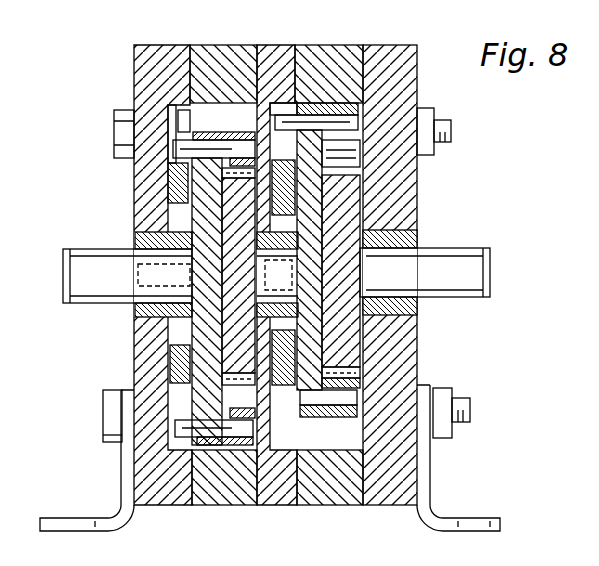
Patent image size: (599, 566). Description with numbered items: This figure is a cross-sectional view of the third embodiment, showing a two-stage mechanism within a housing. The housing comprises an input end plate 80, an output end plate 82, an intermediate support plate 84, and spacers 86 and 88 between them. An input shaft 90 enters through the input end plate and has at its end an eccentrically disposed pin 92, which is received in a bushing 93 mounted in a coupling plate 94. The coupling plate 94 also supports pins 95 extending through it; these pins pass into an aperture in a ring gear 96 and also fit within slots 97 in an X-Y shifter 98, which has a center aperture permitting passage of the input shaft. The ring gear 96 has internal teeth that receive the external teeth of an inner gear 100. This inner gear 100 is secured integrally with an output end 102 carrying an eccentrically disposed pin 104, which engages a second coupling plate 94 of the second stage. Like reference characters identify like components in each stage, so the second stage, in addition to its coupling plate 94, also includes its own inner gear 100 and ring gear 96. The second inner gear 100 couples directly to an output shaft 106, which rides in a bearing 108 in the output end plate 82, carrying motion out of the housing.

The input end plate 80 is at (155, 100).
The output end plate 82 is at (412, 213).
The intermediate support plate 84 is at (278, 45).
The spacer 86 is at (230, 45).
The spacer 88 is at (333, 45).
The input shaft 90 is at (63, 272).
The eccentrically disposed pin 92 is at (198, 318).
The bushing 93 is at (205, 228).
The coupling plate 94 is at (203, 392).
The pins 95 is at (210, 140).
The ring gear 96 is at (243, 447).
The slots 97 is at (178, 126).
The X-Y shifter 98 is at (178, 182).
The inner gear 100 is at (240, 348).
The output end 102 is at (367, 243).
The eccentrically disposed pin 104 is at (303, 262).
The output shaft 106 is at (488, 266).
The bearing 108 is at (378, 300).